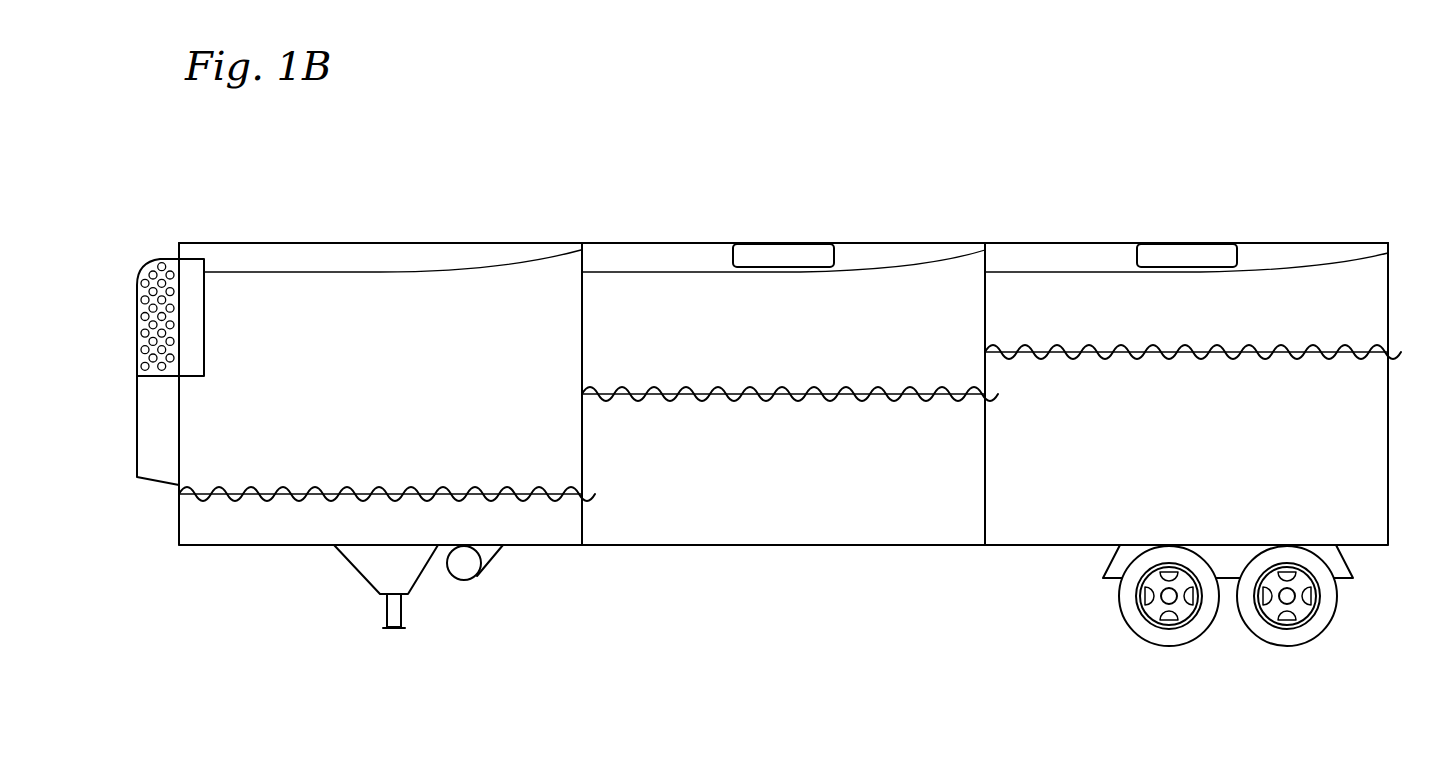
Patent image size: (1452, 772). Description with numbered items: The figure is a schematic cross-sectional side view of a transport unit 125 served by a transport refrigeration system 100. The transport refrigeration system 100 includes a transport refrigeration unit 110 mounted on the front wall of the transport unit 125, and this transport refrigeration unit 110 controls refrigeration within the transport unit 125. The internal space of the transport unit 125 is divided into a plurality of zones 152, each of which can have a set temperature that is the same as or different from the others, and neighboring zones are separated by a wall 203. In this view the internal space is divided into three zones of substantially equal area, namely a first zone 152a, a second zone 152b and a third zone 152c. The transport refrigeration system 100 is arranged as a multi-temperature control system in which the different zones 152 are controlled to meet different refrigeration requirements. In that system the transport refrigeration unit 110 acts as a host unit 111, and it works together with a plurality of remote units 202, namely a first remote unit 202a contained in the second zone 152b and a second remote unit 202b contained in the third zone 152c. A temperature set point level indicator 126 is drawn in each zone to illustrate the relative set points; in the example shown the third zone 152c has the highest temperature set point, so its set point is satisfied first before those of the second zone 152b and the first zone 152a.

The transport refrigeration system (TRS) 100 is at (502, 178).
The transport refrigeration unit (TRU) 110 is at (137, 457).
The host unit 111 is at (140, 250).
The transport unit (TU) 125 is at (1323, 243).
The temperature set point level indicator 126 is at (302, 498).
The zones 152 is at (320, 688).
The first zone 152a is at (373, 528).
The second zone 152b is at (830, 527).
The third zone 152c is at (1093, 528).
The remote units 202 is at (772, 209).
The first remote unit 202a is at (778, 248).
The second remote unit 202b is at (1168, 249).
The wall 203 is at (583, 463).